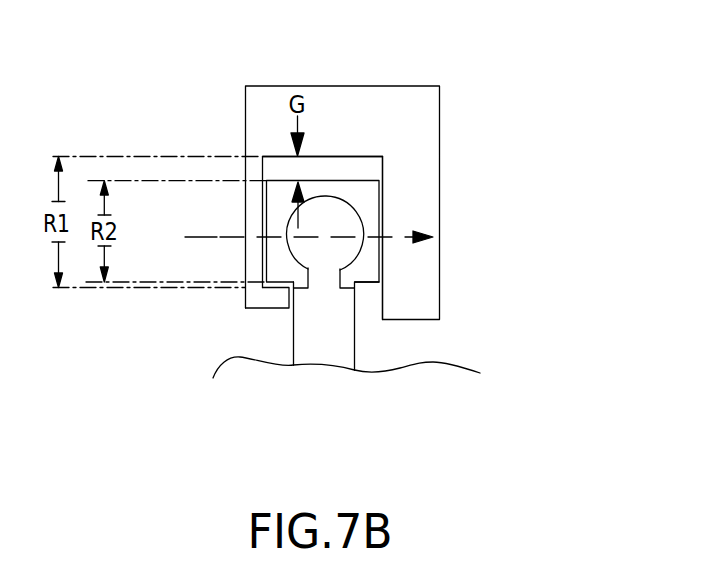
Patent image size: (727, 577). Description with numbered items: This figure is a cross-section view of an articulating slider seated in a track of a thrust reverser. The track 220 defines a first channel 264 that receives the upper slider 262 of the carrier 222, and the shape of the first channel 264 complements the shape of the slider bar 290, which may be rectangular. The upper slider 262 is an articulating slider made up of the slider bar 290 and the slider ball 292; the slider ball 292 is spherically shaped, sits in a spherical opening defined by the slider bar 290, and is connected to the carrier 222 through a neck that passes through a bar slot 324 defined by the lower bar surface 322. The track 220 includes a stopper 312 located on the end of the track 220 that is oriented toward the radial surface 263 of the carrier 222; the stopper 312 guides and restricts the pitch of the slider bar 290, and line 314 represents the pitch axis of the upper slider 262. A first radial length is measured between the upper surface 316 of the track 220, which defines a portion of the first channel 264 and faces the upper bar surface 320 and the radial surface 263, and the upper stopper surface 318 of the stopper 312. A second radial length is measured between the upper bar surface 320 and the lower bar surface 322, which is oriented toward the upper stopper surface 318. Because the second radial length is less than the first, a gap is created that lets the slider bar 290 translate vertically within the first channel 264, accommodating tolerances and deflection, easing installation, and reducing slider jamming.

The track 220 is at (413, 103).
The carrier 222 is at (337, 342).
The upper slider 262 is at (523, 178).
The radial surface 263 is at (297, 291).
The first channel 264 is at (329, 147).
The slider bar 290 is at (372, 252).
The slider ball 292 is at (342, 217).
The stopper 312 is at (263, 302).
The line 314 is at (291, 237).
The upper surface 316 is at (278, 157).
The upper stopper surface 318 is at (276, 285).
The upper bar surface 320 is at (359, 182).
The lower bar surface 322 is at (365, 285).
The bar slot 324 is at (370, 270).